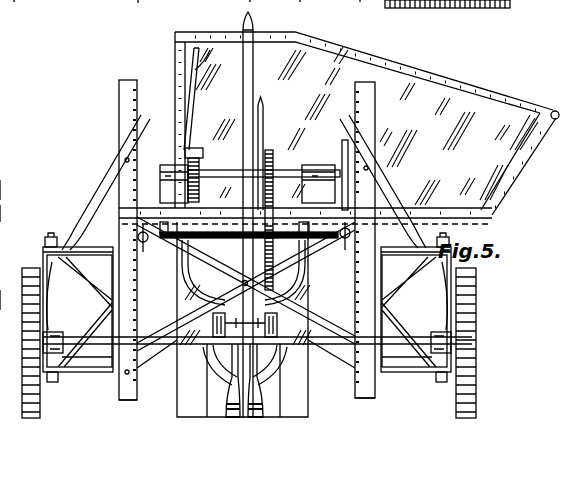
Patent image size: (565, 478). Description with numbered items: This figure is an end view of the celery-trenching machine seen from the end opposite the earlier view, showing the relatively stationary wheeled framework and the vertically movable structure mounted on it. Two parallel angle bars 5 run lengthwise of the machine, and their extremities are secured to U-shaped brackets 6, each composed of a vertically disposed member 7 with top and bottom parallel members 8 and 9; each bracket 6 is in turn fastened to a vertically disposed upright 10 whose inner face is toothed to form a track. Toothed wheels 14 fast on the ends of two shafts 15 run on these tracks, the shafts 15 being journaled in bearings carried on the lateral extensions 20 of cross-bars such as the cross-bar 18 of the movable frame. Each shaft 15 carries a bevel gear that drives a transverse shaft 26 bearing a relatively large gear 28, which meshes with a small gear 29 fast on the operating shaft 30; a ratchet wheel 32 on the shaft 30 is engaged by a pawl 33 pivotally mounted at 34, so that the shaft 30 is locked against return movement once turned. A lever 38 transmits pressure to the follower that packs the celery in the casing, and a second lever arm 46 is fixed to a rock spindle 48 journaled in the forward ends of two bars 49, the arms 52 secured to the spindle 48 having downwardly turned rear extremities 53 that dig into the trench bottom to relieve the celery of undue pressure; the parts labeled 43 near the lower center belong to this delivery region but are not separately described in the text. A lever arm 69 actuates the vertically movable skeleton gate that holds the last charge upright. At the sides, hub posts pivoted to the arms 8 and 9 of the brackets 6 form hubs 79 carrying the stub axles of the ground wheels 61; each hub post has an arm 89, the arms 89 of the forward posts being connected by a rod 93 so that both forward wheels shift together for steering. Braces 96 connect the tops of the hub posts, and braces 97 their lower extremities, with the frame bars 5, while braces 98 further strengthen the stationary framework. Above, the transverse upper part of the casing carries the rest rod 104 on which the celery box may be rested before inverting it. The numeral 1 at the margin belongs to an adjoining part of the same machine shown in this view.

The wheel (adjacent figure) 1 is at (24, 303).
The angle bar 5 is at (456, 130).
The bracket 6 is at (5, 213).
The vertically disposed member 7 is at (5, 190).
The top member 8 is at (96, 255).
The bottom member 9 is at (128, 394).
The upright 10 is at (119, 101).
The toothed wheel 14 is at (146, 243).
The shaft 15 is at (352, 283).
The cross-bar 18 is at (304, 6).
The cross-bar extension 20 is at (361, 8).
The transverse shaft 26 is at (243, 272).
The large gear 28 is at (252, 220).
The small gear 29 is at (283, 152).
The shaft 30 is at (300, 170).
The ratchet wheel 32 is at (211, 101).
The pawl 33 is at (216, 75).
The pivot 34 is at (136, 6).
The lever 38 is at (255, 78).
The delivery tube 43 is at (222, 372).
The lever arm 46 is at (263, 118).
The rock spindle 48 is at (243, 270).
The bar 49 is at (139, 12).
The arm 52 is at (262, 380).
The downwardly turned extremity 53 is at (232, 420).
The ground wheel 61 is at (40, 407).
The lever arm 69 is at (183, 99).
The hub 79 is at (54, 283).
The arm 89 is at (480, 8).
The rod 93 is at (176, 368).
The brace 96 is at (95, 290).
The brace 97 is at (68, 352).
The brace 98 is at (100, 190).
The rest rod 104 is at (557, 119).